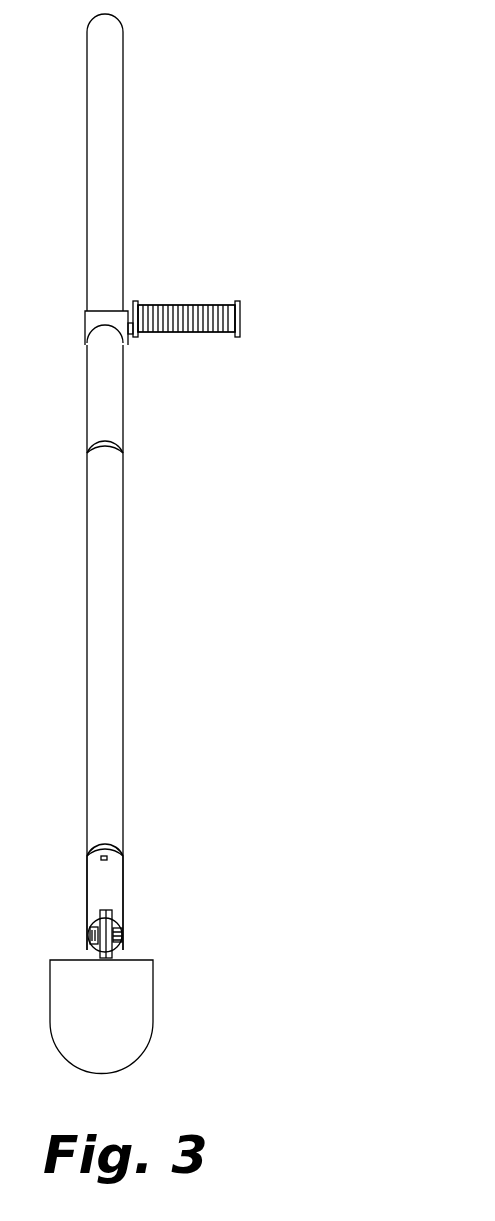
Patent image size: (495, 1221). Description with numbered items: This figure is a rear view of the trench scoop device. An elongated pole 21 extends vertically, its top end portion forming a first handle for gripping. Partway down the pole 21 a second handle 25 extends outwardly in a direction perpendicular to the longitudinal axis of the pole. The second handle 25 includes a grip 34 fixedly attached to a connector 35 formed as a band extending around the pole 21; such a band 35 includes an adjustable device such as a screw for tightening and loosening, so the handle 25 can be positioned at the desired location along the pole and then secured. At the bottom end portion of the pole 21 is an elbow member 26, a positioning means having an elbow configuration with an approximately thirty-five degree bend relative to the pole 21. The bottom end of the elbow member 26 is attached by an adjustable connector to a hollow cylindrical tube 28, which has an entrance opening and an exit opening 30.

The pole 21 is at (114, 411).
The second handle 25 is at (241, 318).
The elbow member 26 is at (114, 876).
The hollow cylindrical tube 28 is at (135, 1000).
The exit opening 30 is at (147, 947).
The grip 34 is at (188, 305).
The connector 35 is at (100, 315).